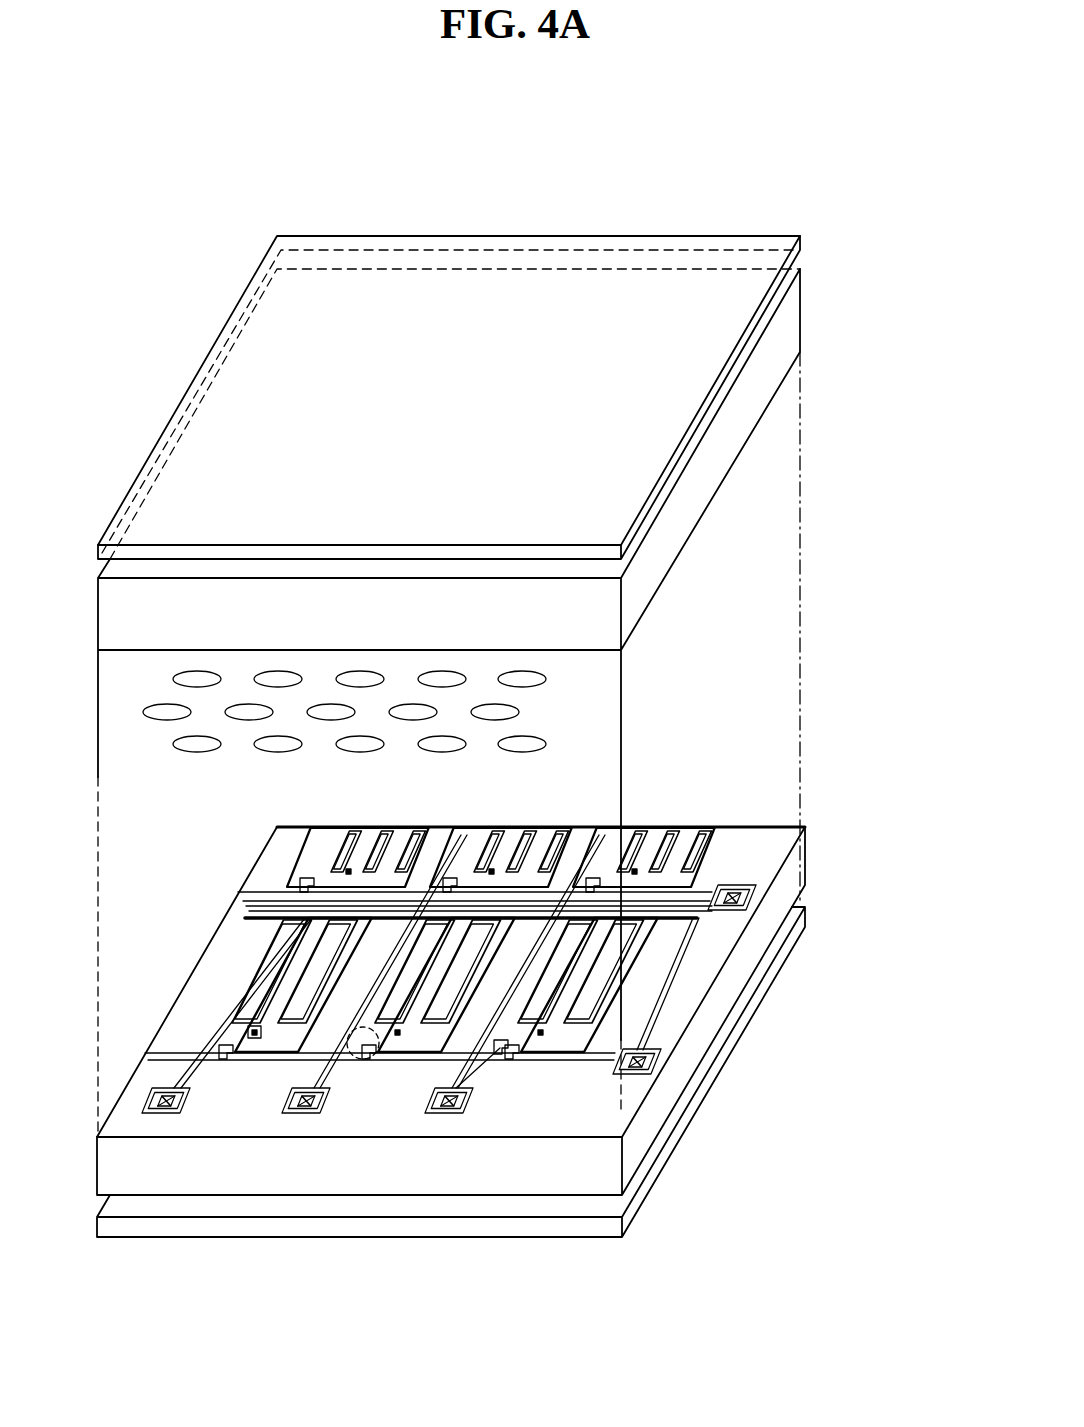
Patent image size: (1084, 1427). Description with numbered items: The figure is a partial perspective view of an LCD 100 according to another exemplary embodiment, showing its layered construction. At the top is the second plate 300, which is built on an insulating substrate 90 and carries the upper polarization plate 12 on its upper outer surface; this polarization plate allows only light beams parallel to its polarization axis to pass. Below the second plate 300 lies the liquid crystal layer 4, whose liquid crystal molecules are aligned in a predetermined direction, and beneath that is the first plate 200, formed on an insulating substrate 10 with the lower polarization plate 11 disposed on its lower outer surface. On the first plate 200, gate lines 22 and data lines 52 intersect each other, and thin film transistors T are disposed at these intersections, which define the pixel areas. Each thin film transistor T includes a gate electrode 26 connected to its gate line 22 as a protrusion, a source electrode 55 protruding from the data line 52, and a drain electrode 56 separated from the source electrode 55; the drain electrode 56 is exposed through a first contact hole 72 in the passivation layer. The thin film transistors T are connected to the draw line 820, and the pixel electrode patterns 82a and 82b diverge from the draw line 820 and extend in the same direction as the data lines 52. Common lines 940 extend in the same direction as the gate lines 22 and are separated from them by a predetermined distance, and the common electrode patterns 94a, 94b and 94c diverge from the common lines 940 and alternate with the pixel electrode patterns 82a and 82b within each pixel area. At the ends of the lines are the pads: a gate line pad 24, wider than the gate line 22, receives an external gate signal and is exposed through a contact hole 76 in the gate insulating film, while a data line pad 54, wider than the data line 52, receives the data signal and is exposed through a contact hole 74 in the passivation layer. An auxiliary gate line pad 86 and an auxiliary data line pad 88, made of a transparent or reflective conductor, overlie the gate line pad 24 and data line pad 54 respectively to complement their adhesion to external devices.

The LCD 100 is at (680, 170).
The second plate 300 is at (868, 265).
The upper polarization plate 12 is at (273, 332).
The insulating substrate 90 is at (775, 349).
The liquid crystal layer 4 is at (96, 650).
The first plate 200 is at (885, 843).
The insulating substrate 10 is at (797, 878).
The lower polarization plate 11 is at (768, 991).
The common line 940 is at (255, 920).
The draw line 820 is at (226, 1062).
The common electrode pattern 94a is at (262, 978).
The common electrode pattern 94b is at (288, 1030).
The common electrode pattern 94c is at (301, 1057).
The pixel electrode pattern 82a is at (317, 930).
The pixel electrode pattern 82b is at (357, 930).
The gate electrode 26 is at (252, 1033).
The thin film transistor T is at (370, 1060).
The gate line 22 is at (253, 1087).
The data line 52 is at (352, 1112).
The first contact hole 72 is at (408, 1110).
The contact hole 74 is at (447, 1112).
The data line pad 54 is at (470, 1112).
The auxiliary data line pad 88 is at (465, 1112).
The auxiliary gate line pad 86 is at (622, 1072).
The gate line pad 24 is at (640, 1074).
The contact hole 76 is at (645, 1074).
The source electrode 55 is at (498, 1052).
The drain electrode 56 is at (508, 1052).